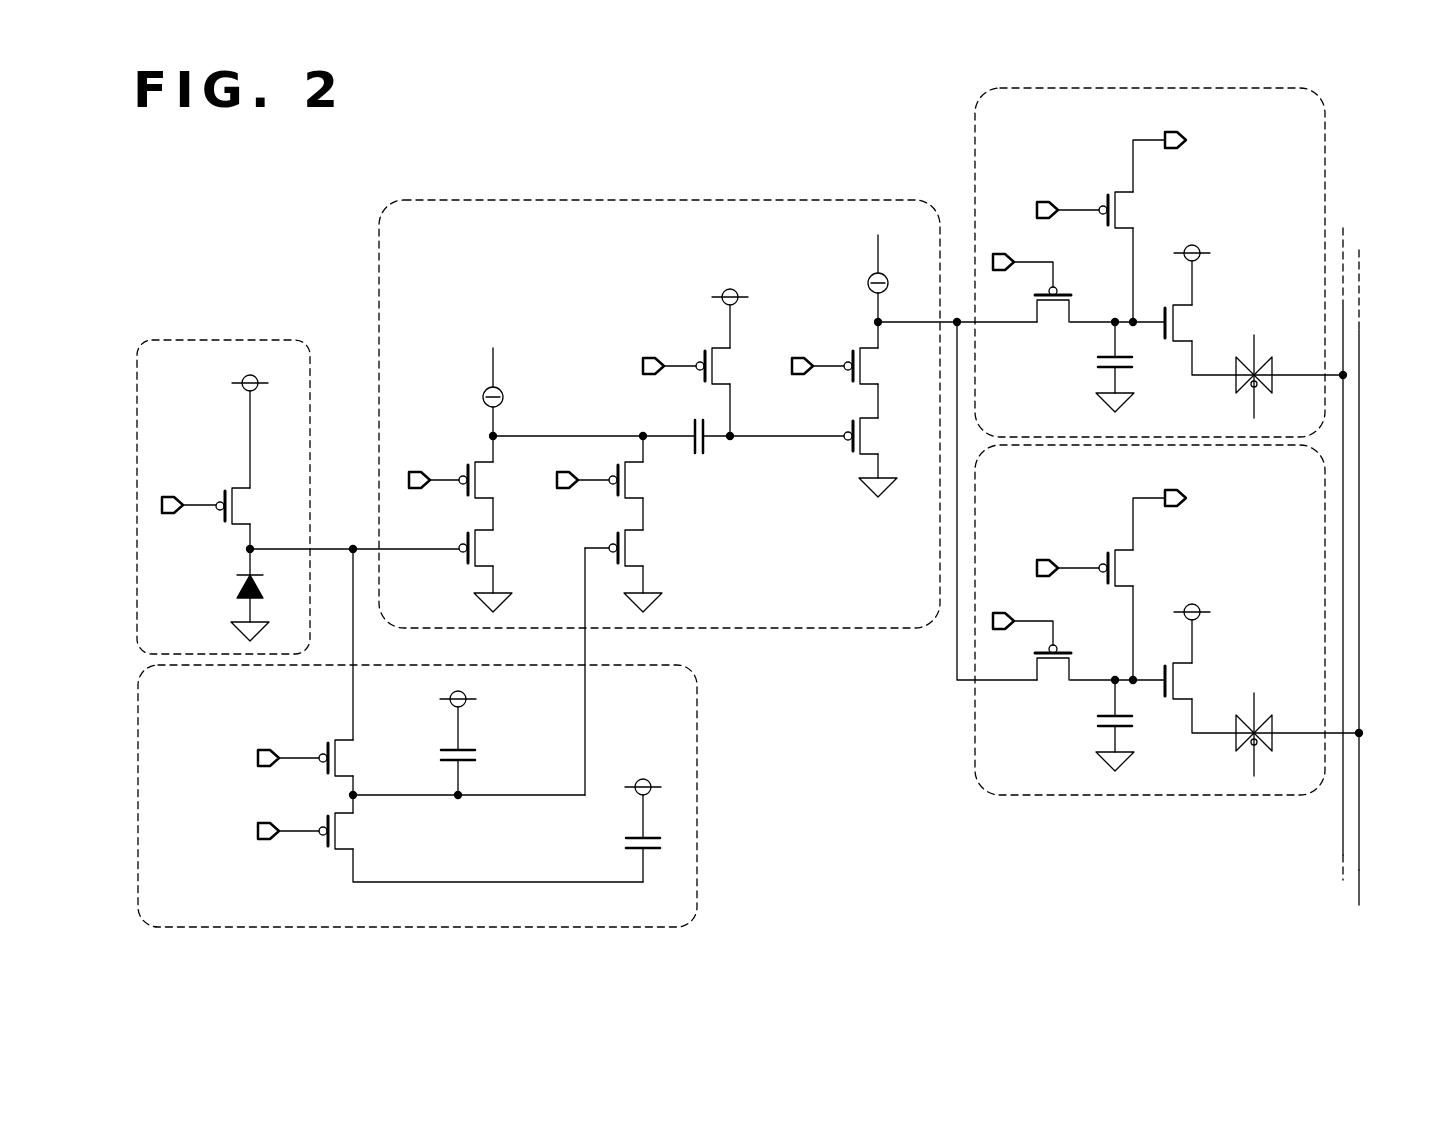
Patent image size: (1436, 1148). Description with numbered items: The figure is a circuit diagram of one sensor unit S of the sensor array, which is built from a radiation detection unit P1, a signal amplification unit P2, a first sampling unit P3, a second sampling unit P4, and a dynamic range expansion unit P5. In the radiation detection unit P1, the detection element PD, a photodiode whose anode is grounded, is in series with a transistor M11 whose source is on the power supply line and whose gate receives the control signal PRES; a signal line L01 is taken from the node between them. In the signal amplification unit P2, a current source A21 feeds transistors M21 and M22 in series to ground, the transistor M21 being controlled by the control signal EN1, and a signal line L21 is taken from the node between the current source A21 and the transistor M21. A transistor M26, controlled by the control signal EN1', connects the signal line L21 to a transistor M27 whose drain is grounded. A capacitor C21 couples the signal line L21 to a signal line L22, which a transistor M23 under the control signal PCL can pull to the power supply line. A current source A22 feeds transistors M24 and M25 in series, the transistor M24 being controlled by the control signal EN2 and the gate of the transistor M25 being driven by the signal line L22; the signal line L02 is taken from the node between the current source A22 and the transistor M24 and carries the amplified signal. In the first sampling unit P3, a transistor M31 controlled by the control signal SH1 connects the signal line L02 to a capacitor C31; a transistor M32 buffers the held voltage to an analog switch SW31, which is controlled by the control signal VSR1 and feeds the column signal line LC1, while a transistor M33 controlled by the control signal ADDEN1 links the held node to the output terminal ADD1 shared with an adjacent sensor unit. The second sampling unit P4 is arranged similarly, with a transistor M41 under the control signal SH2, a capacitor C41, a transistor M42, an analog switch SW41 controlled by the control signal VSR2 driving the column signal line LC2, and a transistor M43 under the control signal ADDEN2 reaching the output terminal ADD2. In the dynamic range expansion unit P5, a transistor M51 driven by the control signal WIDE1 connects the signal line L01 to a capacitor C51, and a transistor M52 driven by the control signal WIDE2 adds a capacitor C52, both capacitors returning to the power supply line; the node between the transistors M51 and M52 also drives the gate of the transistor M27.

The sensor unit S is at (292, 235).
The radiation detection unit P1 is at (170, 340).
The signal amplification unit P2 is at (411, 199).
The first sampling unit P3 is at (975, 133).
The second sampling unit P4 is at (975, 777).
The dynamic range expansion unit P5 is at (698, 703).
The transistor M11 is at (240, 475).
The control signal PRES is at (175, 520).
The detection element PD is at (234, 608).
The signal line L01 is at (343, 547).
The current source A21 is at (474, 405).
The signal line L21 is at (560, 434).
The transistor M21 is at (482, 496).
The control signal EN1 is at (419, 496).
The transistor M22 is at (497, 571).
The transistor M26 is at (631, 483).
The control signal EN1' is at (569, 496).
The transistor M27 is at (635, 662).
The capacitor C21 is at (705, 425).
The transistor M23 is at (719, 364).
The control signal PCL is at (653, 353).
The signal line L22 is at (783, 439).
The current source A22 is at (932, 291).
The transistor M24 is at (868, 383).
The control signal EN2 is at (804, 381).
The transistor M25 is at (883, 457).
The output terminal ADD1 is at (1170, 149).
The transistor M33 is at (1117, 259).
The control signal ADDEN1 is at (1048, 197).
The control signal SH1 is at (1018, 257).
The transistor M31 is at (1099, 319).
The capacitor C31 is at (1095, 366).
The transistor M32 is at (1256, 312).
The control signal VSR1 is at (1274, 371).
The analog switch SW31 is at (1226, 388).
The signal line L02 is at (957, 674).
The output terminal ADD2 is at (1170, 508).
The transistor M43 is at (1117, 617).
The control signal ADDEN2 is at (1048, 556).
The control signal SH2 is at (1018, 615).
The transistor M41 is at (1098, 676).
The capacitor C41 is at (1095, 724).
The transistor M42 is at (1264, 670).
The control signal VSR2 is at (1273, 729).
The analog switch SW41 is at (1226, 748).
The column signal line LC1 is at (1343, 828).
The column signal line LC2 is at (1362, 838).
The transistor M51 is at (432, 776).
The control signal WIDE1 is at (232, 760).
The transistor M52 is at (461, 847).
The control signal WIDE2 is at (232, 830).
The capacitor C51 is at (480, 745).
The capacitor C52 is at (621, 830).